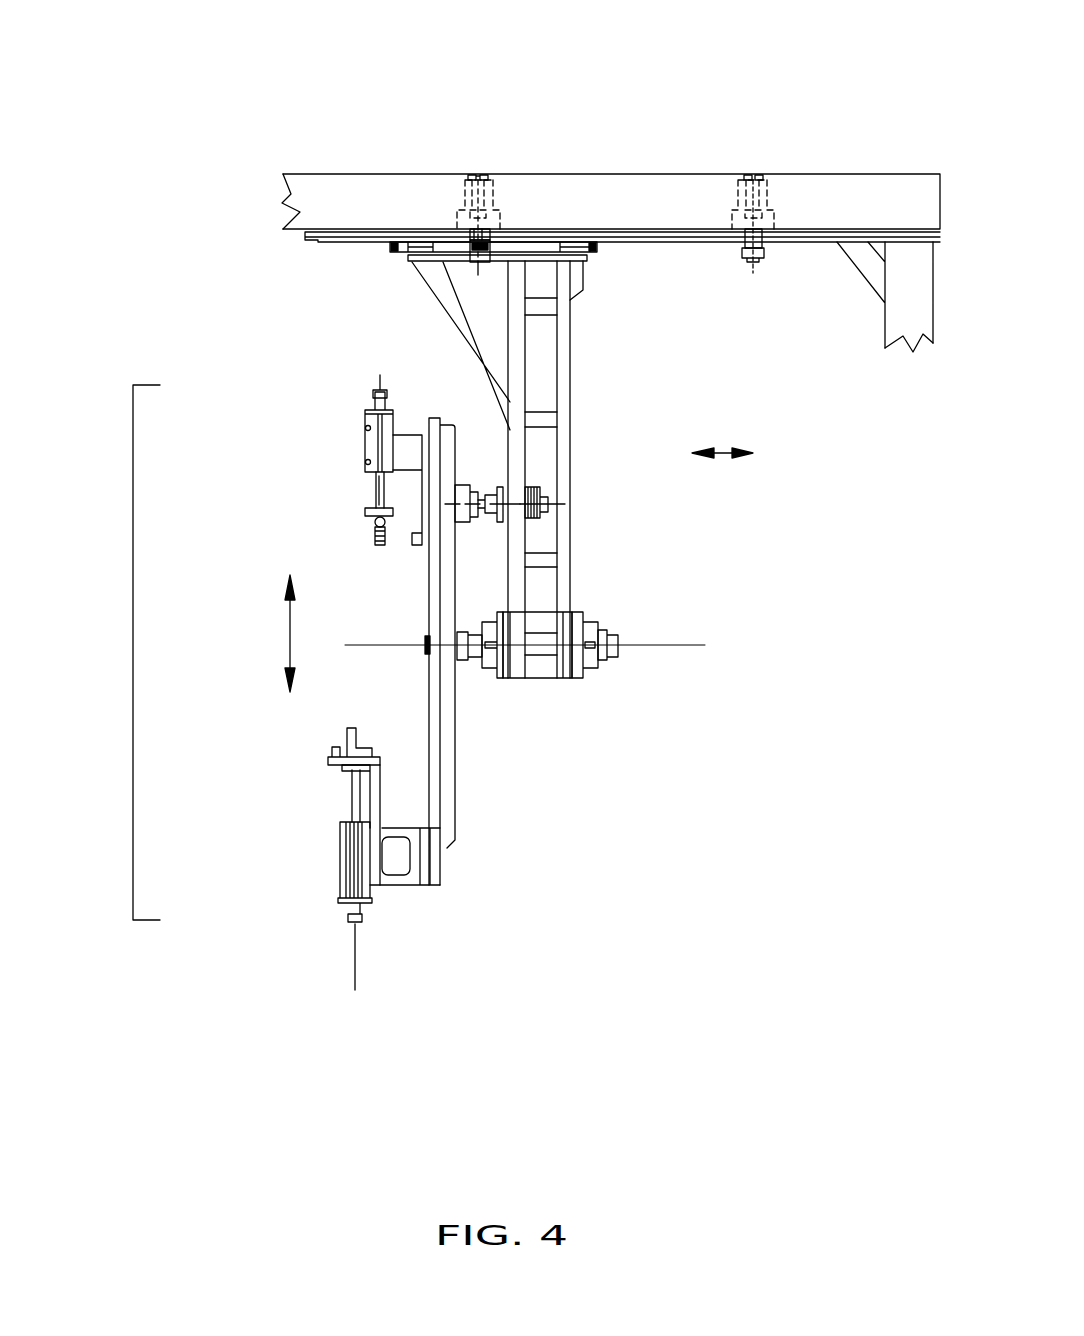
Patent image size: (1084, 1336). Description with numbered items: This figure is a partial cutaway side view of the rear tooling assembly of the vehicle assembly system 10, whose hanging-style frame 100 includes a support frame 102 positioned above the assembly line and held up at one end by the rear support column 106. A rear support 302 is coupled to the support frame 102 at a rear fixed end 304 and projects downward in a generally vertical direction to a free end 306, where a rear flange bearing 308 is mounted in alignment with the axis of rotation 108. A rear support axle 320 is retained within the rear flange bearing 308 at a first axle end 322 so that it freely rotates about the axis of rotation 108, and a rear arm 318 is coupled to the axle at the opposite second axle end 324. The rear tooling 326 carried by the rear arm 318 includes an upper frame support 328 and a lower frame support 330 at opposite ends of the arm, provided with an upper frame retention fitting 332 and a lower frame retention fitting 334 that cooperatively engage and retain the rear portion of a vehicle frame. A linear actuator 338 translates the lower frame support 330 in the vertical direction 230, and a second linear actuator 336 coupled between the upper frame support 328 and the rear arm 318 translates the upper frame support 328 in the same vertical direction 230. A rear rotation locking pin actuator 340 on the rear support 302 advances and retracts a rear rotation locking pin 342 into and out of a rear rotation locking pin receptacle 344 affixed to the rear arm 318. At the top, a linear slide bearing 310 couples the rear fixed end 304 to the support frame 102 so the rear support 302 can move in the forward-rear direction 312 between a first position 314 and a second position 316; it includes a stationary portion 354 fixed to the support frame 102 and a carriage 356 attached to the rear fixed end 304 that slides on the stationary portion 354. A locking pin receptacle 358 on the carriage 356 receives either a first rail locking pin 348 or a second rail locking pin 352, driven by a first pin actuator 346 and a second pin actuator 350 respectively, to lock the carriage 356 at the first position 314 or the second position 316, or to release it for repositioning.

The vehicle assembly system 10 is at (183, 100).
The hanging-style frame 100 is at (273, 150).
The support frame 102 is at (300, 210).
The rear support column 106 is at (900, 333).
The axis of rotation 108 is at (667, 643).
The vertical direction 230 is at (288, 633).
The rear support 302 is at (565, 417).
The rear fixed end 304 is at (565, 320).
The free end 306 is at (572, 683).
The rear flange bearing 308 is at (595, 665).
The linear slide bearing 310 is at (290, 252).
The forward-rear direction 312 is at (727, 448).
The first position 314 is at (476, 165).
The second position 316 is at (753, 166).
The rear arm 318 is at (445, 742).
The rear support axle 320 is at (538, 650).
The first axle end 322 is at (613, 650).
The second axle end 324 is at (428, 640).
The rear tooling 326 is at (133, 632).
The upper frame support 328 is at (376, 490).
The lower frame support 330 is at (352, 795).
The upper frame retention fitting 332 is at (375, 540).
The lower frame retention fitting 334 is at (348, 730).
The second linear actuator 336 is at (365, 445).
The linear actuator 338 is at (350, 855).
The rear rotation locking pin actuator 340 is at (538, 488).
The rear rotation locking pin 342 is at (478, 497).
The rear rotation locking pin receptacle 344 is at (464, 488).
The first pin actuator 346 is at (487, 177).
The first rail locking pin 348 is at (487, 230).
The second pin actuator 350 is at (768, 197).
The second rail locking pin 352 is at (748, 255).
The stationary portion 354 is at (342, 243).
The carriage 356 is at (402, 253).
The locking pin receptacle 358 is at (460, 253).